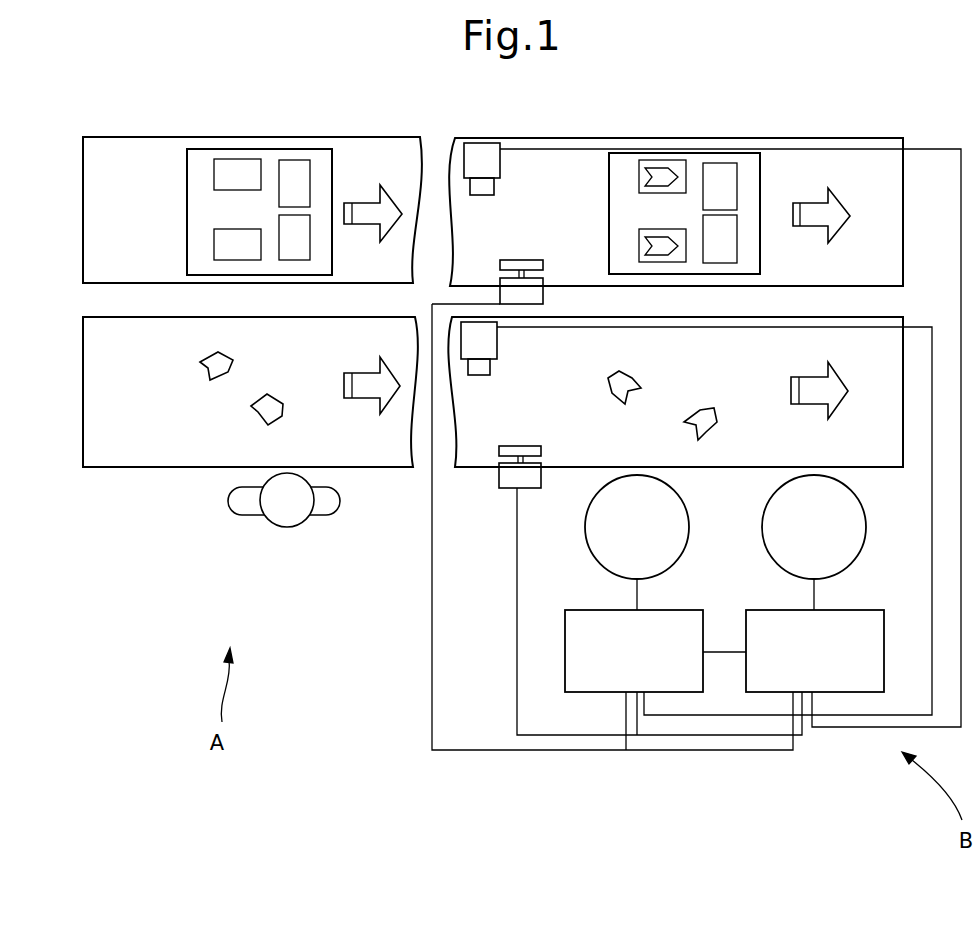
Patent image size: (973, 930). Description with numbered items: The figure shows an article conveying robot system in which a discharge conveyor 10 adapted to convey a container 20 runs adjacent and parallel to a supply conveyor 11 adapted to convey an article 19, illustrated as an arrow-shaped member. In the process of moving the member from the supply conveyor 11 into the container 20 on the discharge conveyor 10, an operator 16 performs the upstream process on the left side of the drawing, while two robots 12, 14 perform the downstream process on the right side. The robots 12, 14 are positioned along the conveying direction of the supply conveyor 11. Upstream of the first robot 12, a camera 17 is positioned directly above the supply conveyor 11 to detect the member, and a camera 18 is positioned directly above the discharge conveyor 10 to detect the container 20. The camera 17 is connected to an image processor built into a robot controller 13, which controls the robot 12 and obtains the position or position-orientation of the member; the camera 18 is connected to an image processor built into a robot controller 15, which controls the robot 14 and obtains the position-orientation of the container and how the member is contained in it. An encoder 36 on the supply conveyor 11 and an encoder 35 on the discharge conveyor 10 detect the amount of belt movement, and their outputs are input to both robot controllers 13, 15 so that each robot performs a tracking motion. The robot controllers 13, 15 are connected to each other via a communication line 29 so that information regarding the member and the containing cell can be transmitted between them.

The discharge conveyor 10 is at (128, 128).
The supply conveyor 11 is at (111, 471).
The robot 12 is at (588, 518).
The robot controller 13 is at (566, 677).
The robot 14 is at (762, 519).
The robot controller 15 is at (885, 681).
The operator 16 is at (271, 527).
The camera 17 is at (470, 376).
The camera 18 is at (482, 143).
The article 19 is at (218, 381).
The container 20 is at (242, 149).
The communication line 29 is at (720, 655).
The encoder 35 is at (530, 260).
The encoder 36 is at (512, 490).